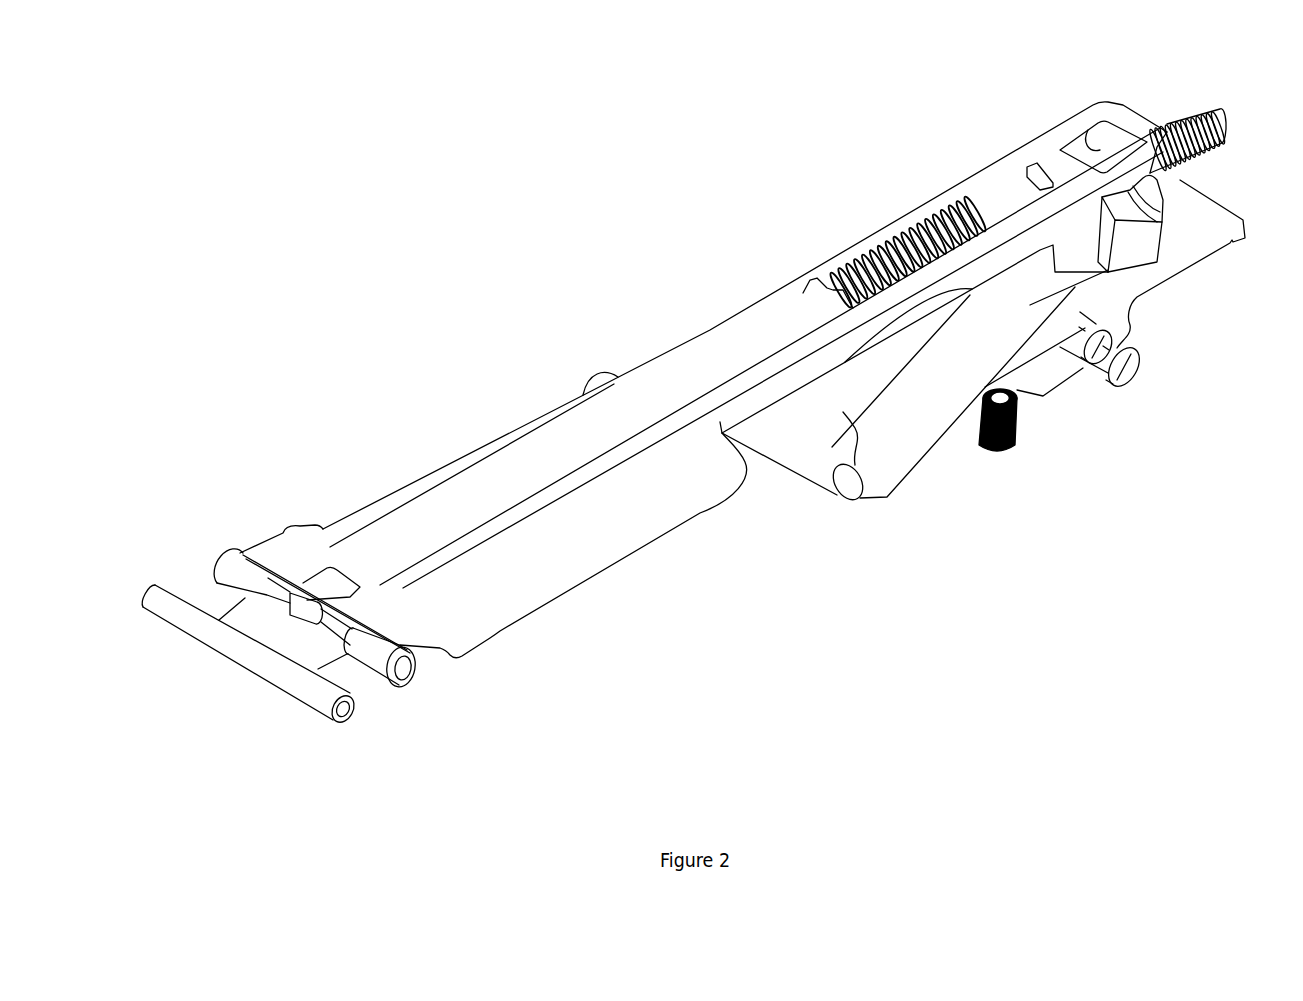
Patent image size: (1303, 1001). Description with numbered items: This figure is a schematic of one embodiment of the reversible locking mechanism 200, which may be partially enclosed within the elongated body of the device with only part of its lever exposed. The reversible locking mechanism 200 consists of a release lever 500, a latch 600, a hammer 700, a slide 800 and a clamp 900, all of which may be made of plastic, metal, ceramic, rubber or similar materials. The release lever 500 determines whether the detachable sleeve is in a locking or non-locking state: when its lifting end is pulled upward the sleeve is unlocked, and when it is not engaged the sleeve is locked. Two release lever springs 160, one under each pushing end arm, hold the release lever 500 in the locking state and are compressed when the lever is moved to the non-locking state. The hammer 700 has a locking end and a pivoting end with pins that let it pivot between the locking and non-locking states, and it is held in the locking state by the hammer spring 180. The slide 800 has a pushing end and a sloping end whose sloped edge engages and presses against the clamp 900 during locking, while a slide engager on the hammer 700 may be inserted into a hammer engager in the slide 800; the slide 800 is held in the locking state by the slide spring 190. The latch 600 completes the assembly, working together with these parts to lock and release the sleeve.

The reversible locking mechanism 200 is at (715, 408).
The slide 800 is at (467, 500).
The slide spring 190 is at (892, 262).
The hammer spring 180 is at (1193, 130).
The hammer 700 is at (1138, 235).
The release lever 500 is at (1177, 250).
The release lever springs 160 is at (1005, 427).
The latch 600 is at (810, 442).
The clamp 900 is at (245, 652).